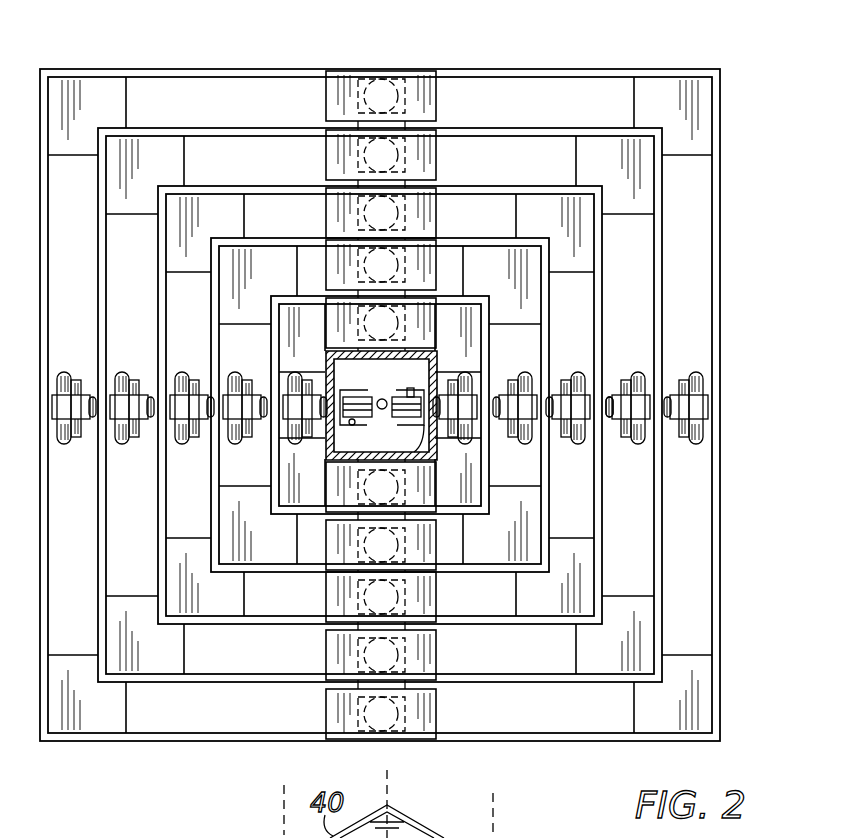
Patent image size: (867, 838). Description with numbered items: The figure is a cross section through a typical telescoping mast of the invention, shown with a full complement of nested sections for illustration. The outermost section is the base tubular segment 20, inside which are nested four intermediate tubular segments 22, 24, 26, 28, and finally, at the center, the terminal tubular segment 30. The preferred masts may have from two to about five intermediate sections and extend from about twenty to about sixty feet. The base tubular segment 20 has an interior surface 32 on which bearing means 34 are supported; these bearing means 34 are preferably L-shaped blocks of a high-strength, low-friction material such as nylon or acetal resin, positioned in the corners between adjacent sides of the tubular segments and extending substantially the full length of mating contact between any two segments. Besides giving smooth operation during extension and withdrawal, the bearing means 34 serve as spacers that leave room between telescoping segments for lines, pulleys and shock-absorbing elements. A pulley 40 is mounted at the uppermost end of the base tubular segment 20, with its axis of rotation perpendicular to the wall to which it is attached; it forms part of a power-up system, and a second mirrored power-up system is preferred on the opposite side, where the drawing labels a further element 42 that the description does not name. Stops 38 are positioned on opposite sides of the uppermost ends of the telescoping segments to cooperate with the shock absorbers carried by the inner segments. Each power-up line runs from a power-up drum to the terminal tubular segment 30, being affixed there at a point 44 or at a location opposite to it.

The base tubular segment 20 is at (567, 70).
The intermediate tubular segment 22 is at (661, 308).
The intermediate tubular segment 24 is at (606, 336).
The intermediate tubular segment 26 is at (551, 357).
The intermediate tubular segment 28 is at (504, 380).
The terminal tubular segment 30 is at (437, 355).
The interior surface 32 is at (195, 73).
The bearing means 34 is at (95, 97).
The stops 38 is at (410, 90).
The pulley 40 is at (695, 398).
The drive gear 42 is at (668, 423).
The point 44 is at (327, 437).